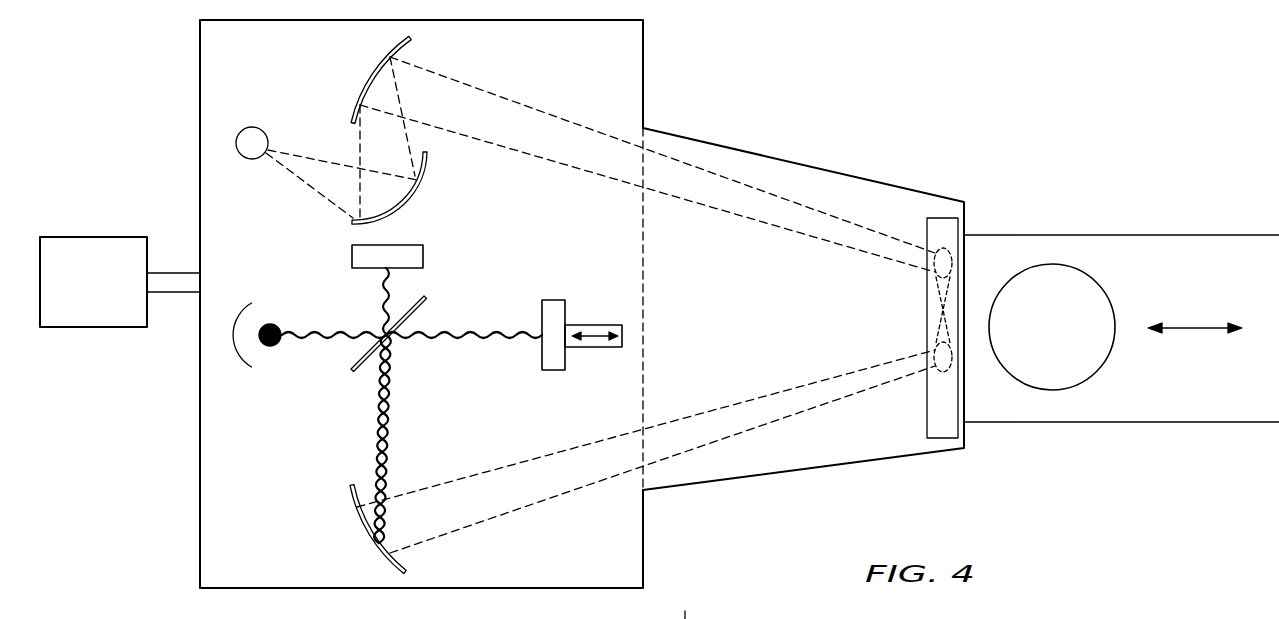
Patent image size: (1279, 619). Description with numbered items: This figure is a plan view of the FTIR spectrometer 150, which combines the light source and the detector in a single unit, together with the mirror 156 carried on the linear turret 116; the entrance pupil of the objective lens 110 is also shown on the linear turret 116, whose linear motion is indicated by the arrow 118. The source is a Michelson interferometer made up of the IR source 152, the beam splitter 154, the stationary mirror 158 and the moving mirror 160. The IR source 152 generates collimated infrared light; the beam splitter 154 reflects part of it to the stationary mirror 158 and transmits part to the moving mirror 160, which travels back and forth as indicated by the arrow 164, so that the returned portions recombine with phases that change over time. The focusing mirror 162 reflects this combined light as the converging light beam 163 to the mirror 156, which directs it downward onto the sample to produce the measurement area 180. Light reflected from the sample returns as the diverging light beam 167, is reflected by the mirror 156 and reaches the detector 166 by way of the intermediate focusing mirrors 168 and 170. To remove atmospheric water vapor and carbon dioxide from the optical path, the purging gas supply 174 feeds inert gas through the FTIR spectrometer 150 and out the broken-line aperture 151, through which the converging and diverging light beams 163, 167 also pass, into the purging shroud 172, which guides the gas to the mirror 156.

The objective lens 110 is at (1108, 292).
The linear turret 116 is at (1133, 423).
The arrow 118 is at (1198, 331).
The FTIR spectrometer 150 is at (200, 549).
The aperture 151 is at (645, 250).
The IR source 152 is at (280, 325).
The beam splitter 154 is at (420, 310).
The mirror 156 is at (943, 218).
The stationary mirror 158 is at (424, 251).
The moving mirror 160 is at (553, 299).
The focusing mirror 162 is at (357, 507).
The converging light beam 163 is at (552, 500).
The arrow 164 is at (596, 347).
The detector 166 is at (250, 127).
The diverging light beam 167 is at (537, 108).
The intermediate focusing mirror 168 is at (363, 88).
The intermediate focusing mirror 170 is at (427, 163).
The purging shroud 172 is at (828, 168).
The purging gas supply 174 is at (111, 295).
The measurement area 180 is at (938, 313).